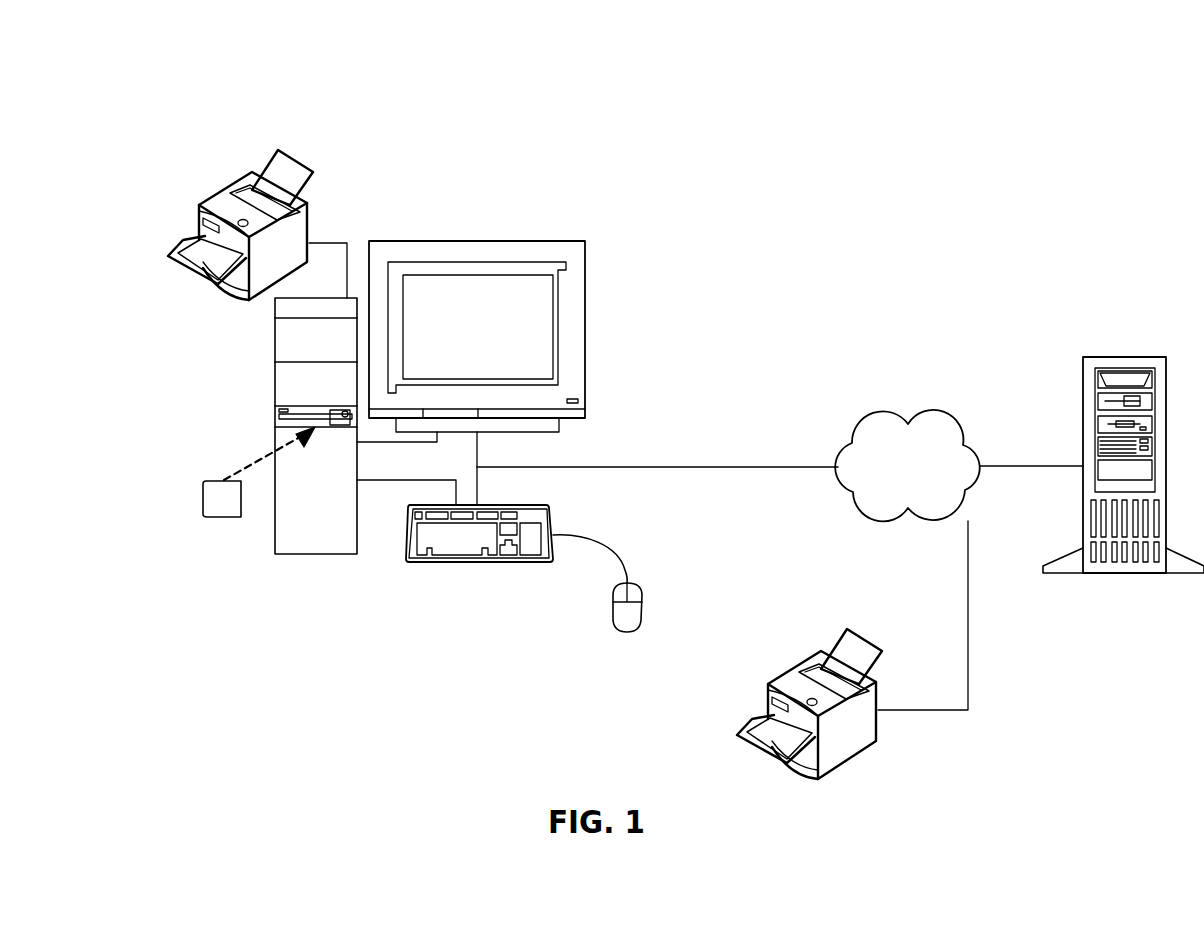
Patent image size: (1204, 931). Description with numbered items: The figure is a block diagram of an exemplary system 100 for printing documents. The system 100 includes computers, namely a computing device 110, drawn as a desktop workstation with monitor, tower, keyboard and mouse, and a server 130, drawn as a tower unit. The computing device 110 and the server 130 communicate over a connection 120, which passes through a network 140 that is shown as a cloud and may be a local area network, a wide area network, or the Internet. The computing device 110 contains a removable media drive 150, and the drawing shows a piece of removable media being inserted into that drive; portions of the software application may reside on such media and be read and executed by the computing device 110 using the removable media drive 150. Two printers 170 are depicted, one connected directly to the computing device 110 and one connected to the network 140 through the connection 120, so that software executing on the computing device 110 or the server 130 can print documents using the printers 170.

The system 100 is at (328, 69).
The computing device 110 is at (477, 236).
The connection 120 is at (780, 454).
The server 130 is at (1124, 350).
The network 140 is at (931, 477).
The removable media drive 150 is at (259, 489).
The printer 170 is at (171, 255).